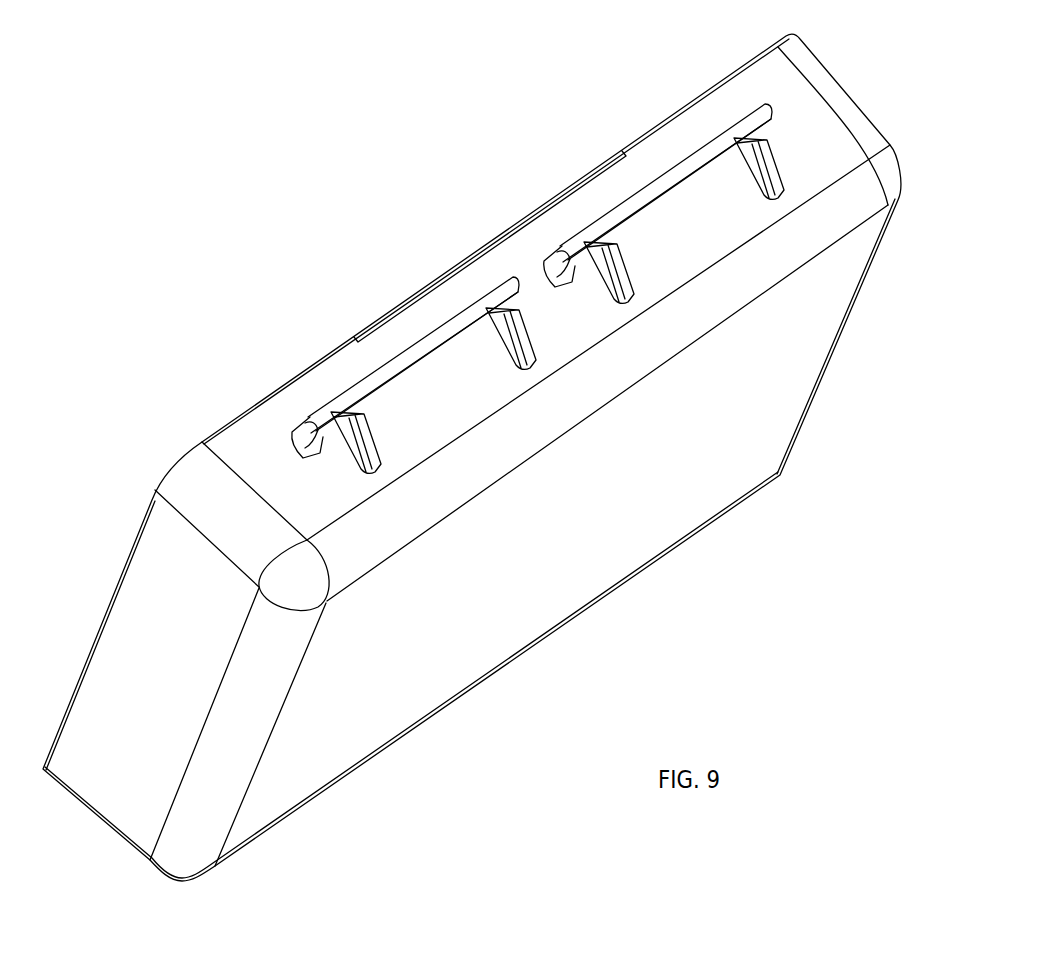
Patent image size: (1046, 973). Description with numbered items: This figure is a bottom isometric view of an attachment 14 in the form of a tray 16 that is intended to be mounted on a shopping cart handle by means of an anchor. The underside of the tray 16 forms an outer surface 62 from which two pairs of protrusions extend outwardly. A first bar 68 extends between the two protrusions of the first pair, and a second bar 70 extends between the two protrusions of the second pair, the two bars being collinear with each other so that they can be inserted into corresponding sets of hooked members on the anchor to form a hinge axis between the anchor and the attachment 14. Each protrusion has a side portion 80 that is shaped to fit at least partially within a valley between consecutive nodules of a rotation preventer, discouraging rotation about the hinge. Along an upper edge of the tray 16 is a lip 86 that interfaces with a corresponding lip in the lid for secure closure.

The attachment 14 is at (375, 158).
The tray 16 is at (264, 414).
The outer surface 62 is at (510, 266).
The first bar 68 is at (665, 182).
The second bar 70 is at (414, 359).
The side portion 80 is at (553, 277).
The lip 86 is at (463, 258).